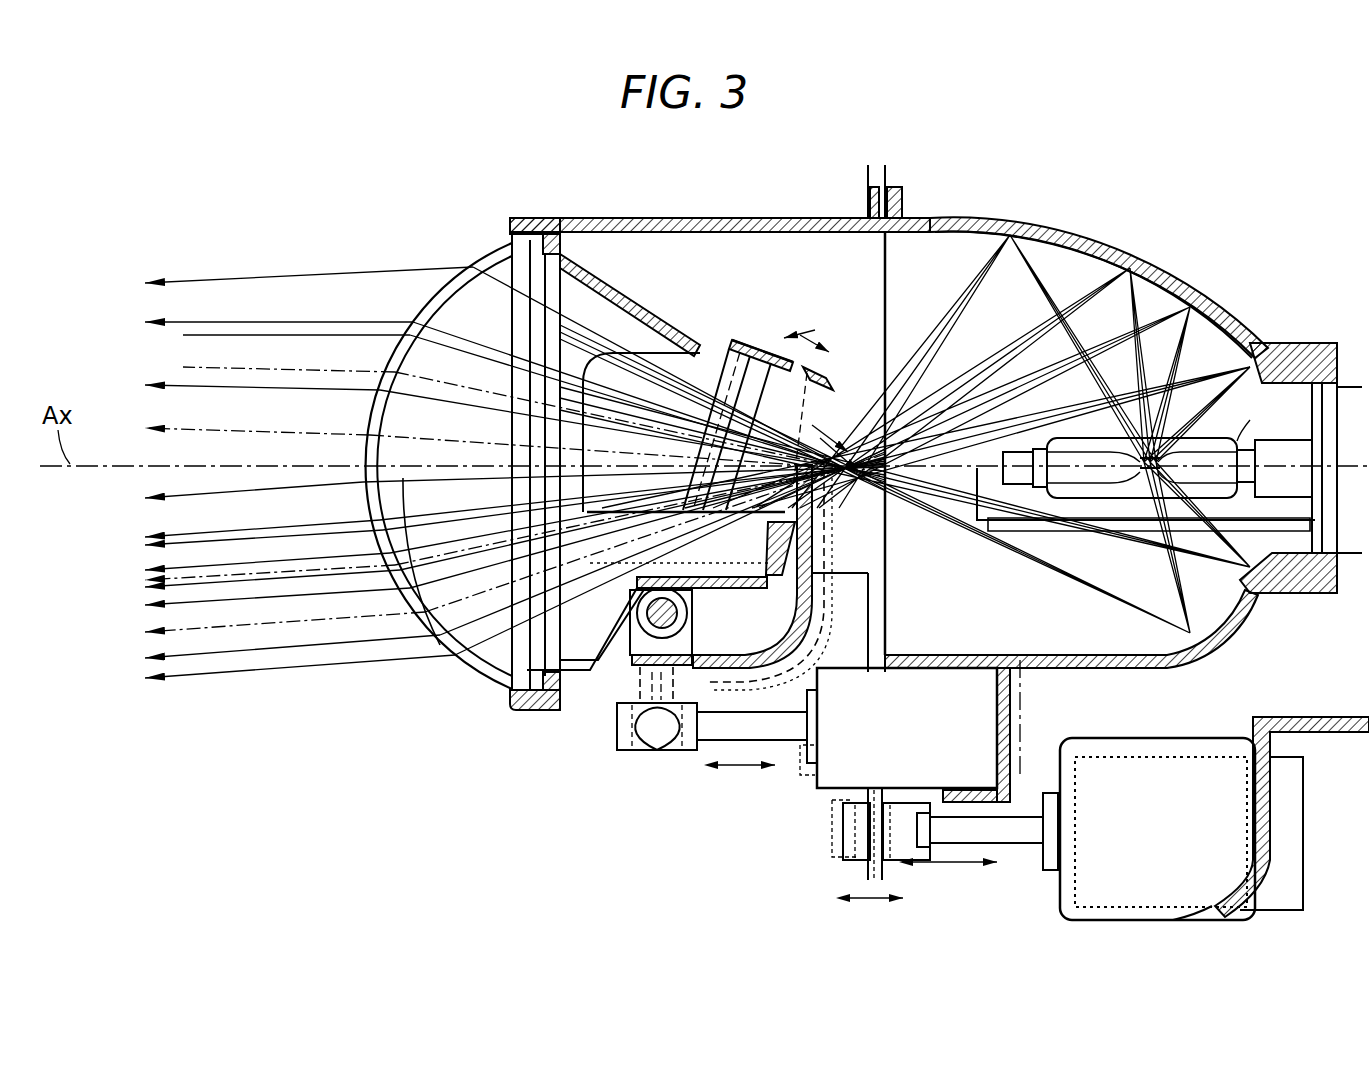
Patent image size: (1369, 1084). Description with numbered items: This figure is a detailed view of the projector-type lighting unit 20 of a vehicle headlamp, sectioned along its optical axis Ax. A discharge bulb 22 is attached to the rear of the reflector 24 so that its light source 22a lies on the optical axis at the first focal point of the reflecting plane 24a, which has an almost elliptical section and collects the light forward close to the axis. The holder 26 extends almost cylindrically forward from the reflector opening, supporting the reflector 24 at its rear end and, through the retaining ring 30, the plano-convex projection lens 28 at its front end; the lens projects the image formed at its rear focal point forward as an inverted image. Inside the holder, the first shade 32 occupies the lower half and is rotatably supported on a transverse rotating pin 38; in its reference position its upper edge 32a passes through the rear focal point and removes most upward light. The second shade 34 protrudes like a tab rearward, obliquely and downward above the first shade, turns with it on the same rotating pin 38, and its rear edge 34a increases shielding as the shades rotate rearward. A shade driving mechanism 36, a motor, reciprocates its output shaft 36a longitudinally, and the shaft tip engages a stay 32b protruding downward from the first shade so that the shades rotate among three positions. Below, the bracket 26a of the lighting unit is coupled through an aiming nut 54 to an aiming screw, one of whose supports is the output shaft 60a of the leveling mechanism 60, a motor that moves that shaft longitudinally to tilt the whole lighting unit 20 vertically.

The lighting unit 20 is at (348, 228).
The discharge bulb 22 is at (1090, 432).
The light source 22a is at (1146, 531).
The reflector 24 is at (1195, 276).
The reflecting plane 24a is at (1158, 283).
The holder 26 is at (627, 217).
The bracket 26a is at (868, 868).
The projection lens 28 is at (417, 308).
The retaining ring 30 is at (507, 213).
The first shade 32 is at (828, 548).
The upper edge 32a is at (815, 427).
The stay 32b is at (657, 688).
The second shade 34 is at (743, 340).
The rear edge 34a is at (802, 350).
The shade driving mechanism 36 is at (1008, 716).
The output shaft 36a is at (713, 733).
The rotating pin 38 is at (682, 612).
The aiming nut 54 is at (843, 833).
The leveling mechanism 60 is at (1280, 748).
The output shaft 60a is at (1013, 840).